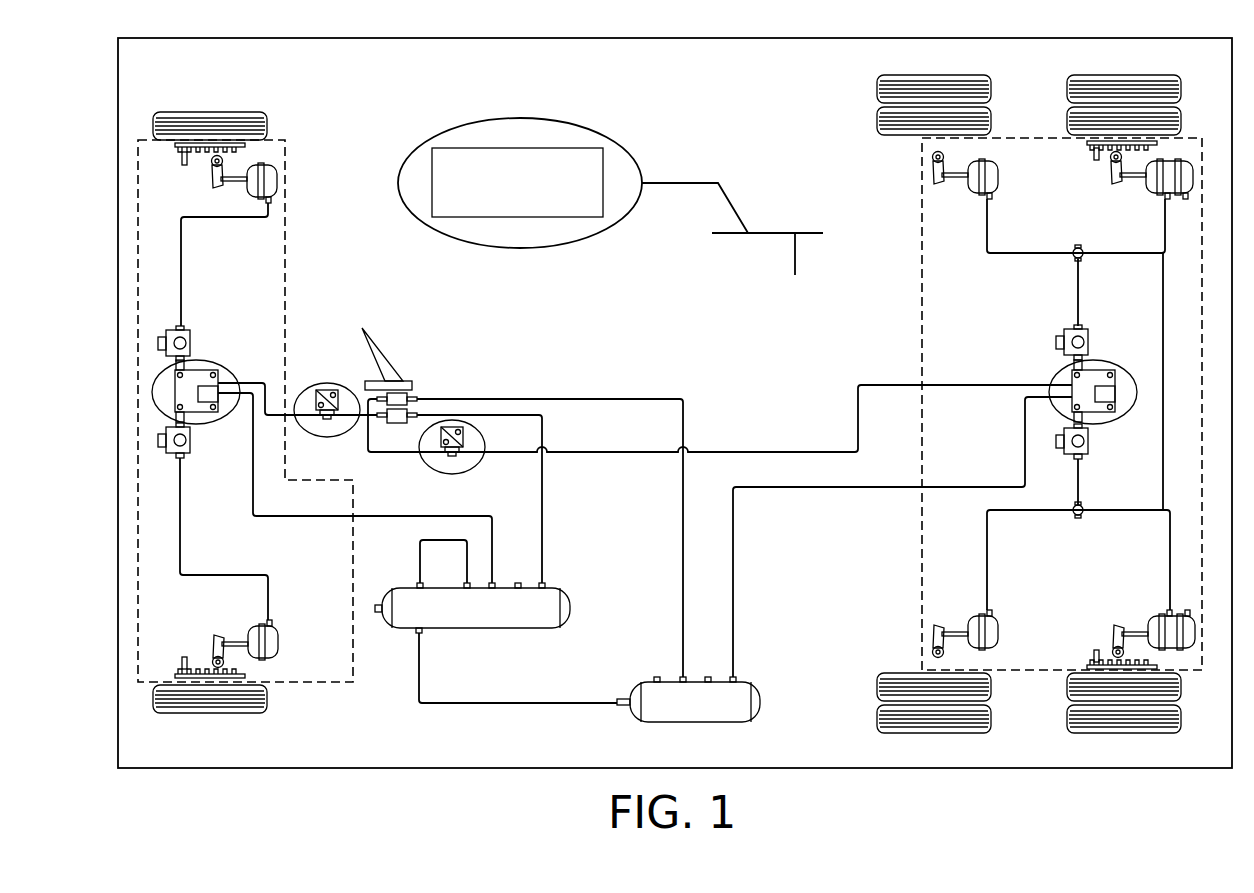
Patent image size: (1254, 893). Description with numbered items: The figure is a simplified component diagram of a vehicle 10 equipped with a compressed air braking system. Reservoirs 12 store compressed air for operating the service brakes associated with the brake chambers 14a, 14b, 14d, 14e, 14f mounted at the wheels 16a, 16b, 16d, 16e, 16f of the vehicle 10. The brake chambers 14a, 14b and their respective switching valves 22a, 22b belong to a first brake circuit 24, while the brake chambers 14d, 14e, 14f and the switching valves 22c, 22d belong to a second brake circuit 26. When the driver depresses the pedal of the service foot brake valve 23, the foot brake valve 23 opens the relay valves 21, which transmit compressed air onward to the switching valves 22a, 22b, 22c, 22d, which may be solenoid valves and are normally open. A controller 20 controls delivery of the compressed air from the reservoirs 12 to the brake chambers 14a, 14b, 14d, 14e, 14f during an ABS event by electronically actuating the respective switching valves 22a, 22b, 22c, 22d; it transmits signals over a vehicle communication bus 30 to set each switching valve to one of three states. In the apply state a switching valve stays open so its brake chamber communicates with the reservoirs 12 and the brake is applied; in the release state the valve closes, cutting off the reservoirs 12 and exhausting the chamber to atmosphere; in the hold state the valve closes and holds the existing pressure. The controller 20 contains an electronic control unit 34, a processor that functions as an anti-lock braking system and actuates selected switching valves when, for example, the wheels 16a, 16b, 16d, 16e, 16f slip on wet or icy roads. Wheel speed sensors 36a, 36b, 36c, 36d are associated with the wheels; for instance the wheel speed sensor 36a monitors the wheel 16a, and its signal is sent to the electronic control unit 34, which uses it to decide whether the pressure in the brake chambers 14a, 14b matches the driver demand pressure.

The vehicle 10 is at (712, 36).
The reservoirs 12 is at (533, 629).
The brake chamber 14a is at (276, 178).
The brake chamber 14b is at (277, 635).
The brake chamber 14d is at (966, 192).
The brake chamber 14e is at (1150, 190).
The brake chamber 14f is at (1155, 622).
The wheel 16a is at (250, 112).
The wheel 16b is at (267, 700).
The wheel 16d is at (876, 105).
The wheel 16e is at (1070, 105).
The wheel 16f is at (1070, 703).
The controller 20 is at (531, 174).
The relay valves 21 is at (213, 374).
The switching valve 22a is at (190, 340).
The switching valve 22b is at (192, 446).
The switching valve 22c is at (1066, 336).
The switching valve 22d is at (1090, 440).
The service foot brake valve 23 is at (392, 358).
The first brake circuit 24 is at (287, 270).
The second brake circuit 26 is at (918, 290).
The vehicle communication bus 30 is at (718, 232).
The electronic control unit 34 is at (603, 130).
The wheel speed sensor 36a is at (185, 167).
The wheel speed sensor 36b is at (184, 655).
The wheel speed sensor 36c is at (1096, 160).
The wheel speed sensor 36d is at (1096, 650).